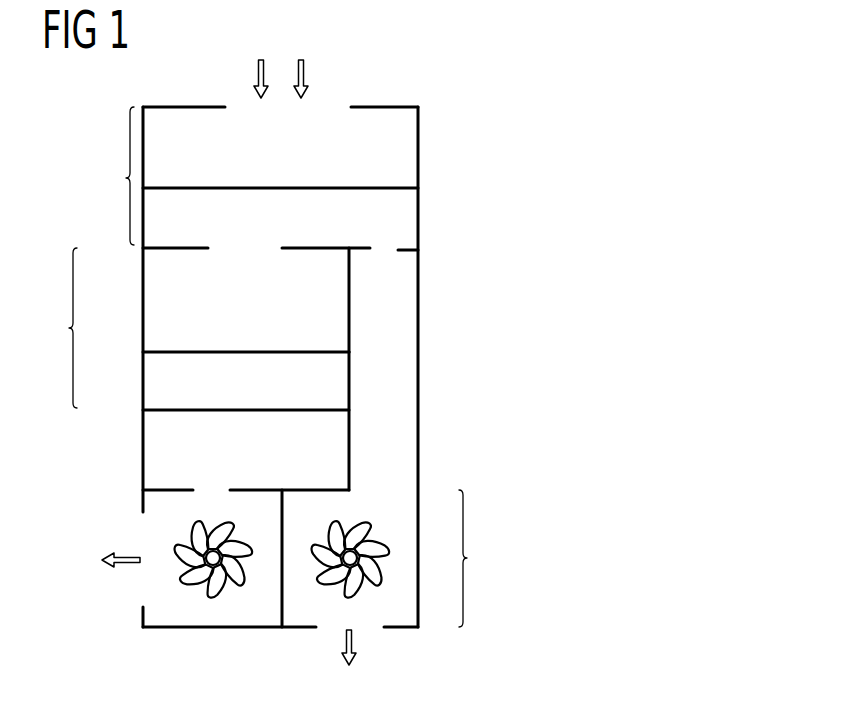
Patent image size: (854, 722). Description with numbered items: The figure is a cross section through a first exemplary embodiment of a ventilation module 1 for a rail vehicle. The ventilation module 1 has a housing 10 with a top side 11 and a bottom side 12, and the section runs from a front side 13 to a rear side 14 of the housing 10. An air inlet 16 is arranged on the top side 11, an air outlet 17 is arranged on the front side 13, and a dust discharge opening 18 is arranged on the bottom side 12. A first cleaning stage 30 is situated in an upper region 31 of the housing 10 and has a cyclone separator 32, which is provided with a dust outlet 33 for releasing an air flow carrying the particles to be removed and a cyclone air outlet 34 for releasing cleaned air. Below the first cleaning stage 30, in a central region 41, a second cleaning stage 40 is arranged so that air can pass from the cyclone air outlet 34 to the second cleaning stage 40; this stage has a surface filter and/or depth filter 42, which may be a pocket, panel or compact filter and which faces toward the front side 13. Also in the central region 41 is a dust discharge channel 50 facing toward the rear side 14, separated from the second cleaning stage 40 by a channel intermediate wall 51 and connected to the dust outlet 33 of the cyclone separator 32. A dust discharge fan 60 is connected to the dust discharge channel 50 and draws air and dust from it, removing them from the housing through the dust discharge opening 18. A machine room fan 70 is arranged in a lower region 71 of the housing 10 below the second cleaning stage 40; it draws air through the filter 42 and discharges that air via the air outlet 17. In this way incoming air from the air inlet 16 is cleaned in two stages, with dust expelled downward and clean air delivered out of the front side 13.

The ventilation module 1 is at (453, 92).
The housing 10 is at (183, 105).
The top side 11 is at (384, 105).
The bottom side 12 is at (252, 627).
The front side 13 is at (143, 397).
The rear side 14 is at (418, 363).
The air inlet 16 is at (282, 72).
The air outlet 17 is at (153, 540).
The dust discharge opening 18 is at (377, 615).
The first cleaning stage 30 is at (407, 238).
The upper region 31 is at (115, 176).
The cyclone separator 32 is at (407, 197).
The dust outlet 33 is at (383, 244).
The cyclone air outlet 34 is at (218, 242).
The second cleaning stage 40 is at (158, 366).
The central region 41 is at (58, 328).
The surface filter and/or depth filter 42 is at (337, 380).
The dust discharge channel 50 is at (402, 328).
The channel intermediate wall 51 is at (350, 278).
The dust discharge fan 60 is at (392, 565).
The machine room fan 70 is at (175, 615).
The lower region 71 is at (481, 558).